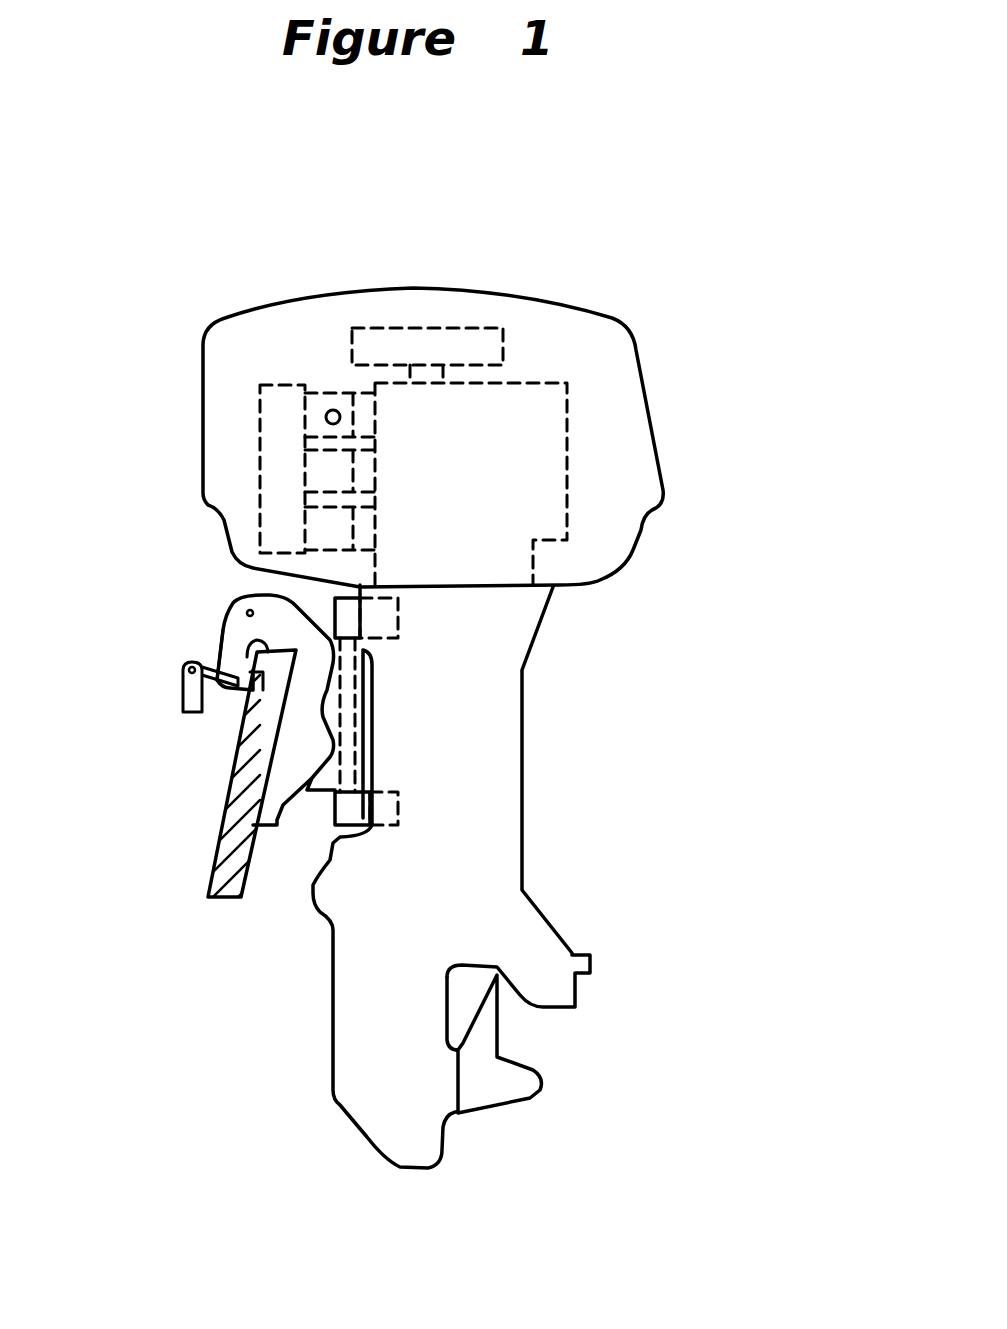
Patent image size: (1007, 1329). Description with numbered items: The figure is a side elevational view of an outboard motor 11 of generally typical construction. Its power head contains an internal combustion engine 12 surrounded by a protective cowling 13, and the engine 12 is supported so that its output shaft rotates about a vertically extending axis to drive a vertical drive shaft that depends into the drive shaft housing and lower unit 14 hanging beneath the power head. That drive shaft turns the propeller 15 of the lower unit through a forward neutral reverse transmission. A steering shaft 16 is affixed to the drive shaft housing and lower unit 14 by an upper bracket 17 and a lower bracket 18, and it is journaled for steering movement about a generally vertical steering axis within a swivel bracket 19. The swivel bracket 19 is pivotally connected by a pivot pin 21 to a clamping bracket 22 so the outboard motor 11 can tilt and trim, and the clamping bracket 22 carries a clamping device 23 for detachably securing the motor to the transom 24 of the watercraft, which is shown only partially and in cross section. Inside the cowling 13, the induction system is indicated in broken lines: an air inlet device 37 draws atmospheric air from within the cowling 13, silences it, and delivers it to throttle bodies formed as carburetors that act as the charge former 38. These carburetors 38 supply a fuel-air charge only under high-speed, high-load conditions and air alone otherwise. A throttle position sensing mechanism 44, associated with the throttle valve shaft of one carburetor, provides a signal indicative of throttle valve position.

The outboard motor 11 is at (589, 692).
The internal combustion engine 12 is at (530, 370).
The protective cowling 13 is at (413, 288).
The drive shaft housing and lower unit 14 is at (523, 733).
The propeller 15 is at (497, 1033).
The steering shaft 16 is at (360, 713).
The upper bracket 17 is at (352, 617).
The lower bracket 18 is at (348, 815).
The swivel bracket 19 is at (360, 742).
The pivot pin 21 is at (240, 612).
The clamping bracket 22 is at (227, 635).
The clamping device 23 is at (183, 697).
The transom 24 is at (213, 853).
The air inlet device 37 is at (260, 477).
The charge former 38 is at (353, 420).
The throttle position sensing mechanism 44 is at (332, 408).